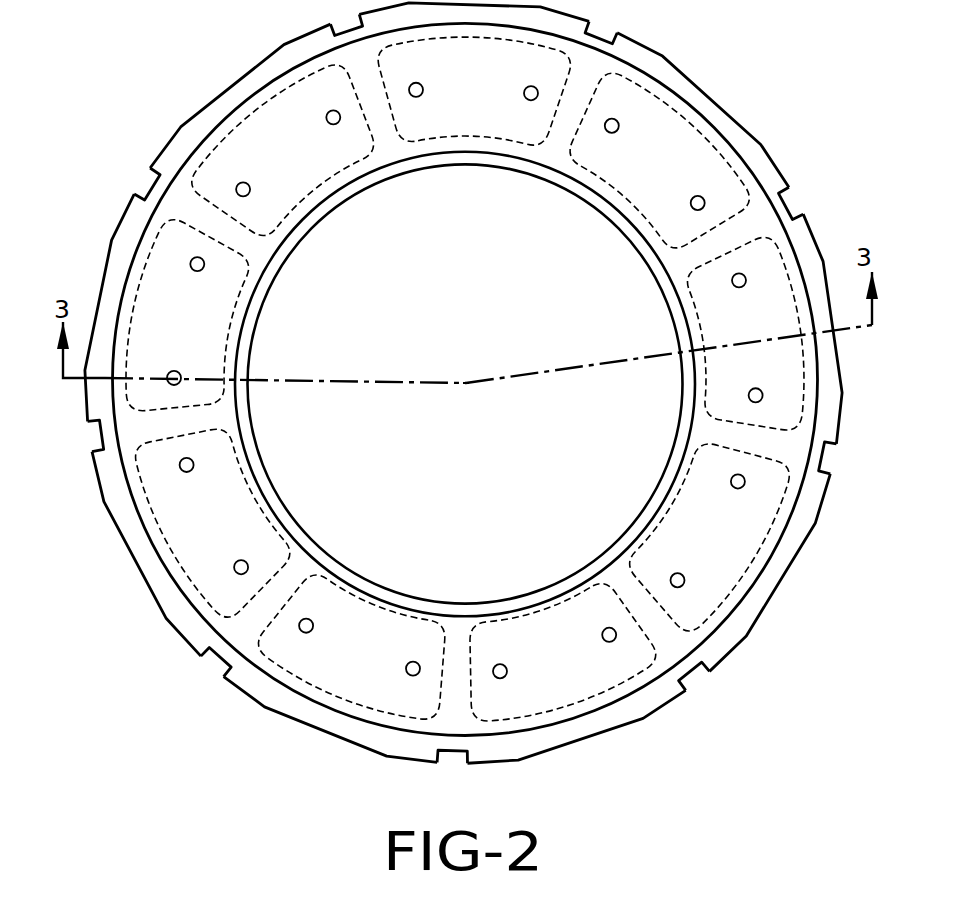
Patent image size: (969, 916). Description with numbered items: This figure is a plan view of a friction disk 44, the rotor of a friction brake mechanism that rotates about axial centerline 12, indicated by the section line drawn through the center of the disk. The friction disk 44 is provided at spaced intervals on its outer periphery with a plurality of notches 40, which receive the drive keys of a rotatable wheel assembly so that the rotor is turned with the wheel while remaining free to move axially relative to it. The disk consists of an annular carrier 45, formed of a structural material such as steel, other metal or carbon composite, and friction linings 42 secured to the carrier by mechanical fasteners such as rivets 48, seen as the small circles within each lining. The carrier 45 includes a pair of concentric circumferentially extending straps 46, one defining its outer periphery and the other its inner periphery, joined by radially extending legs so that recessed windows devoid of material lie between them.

The axial centerline 12 is at (466, 381).
The notches 40 is at (150, 192).
The friction linings 42 is at (590, 720).
The friction disk 44 is at (222, 84).
The annular carrier 45 is at (706, 97).
The circumferentially extending strap 46 is at (338, 732).
The rivets 48 is at (180, 473).